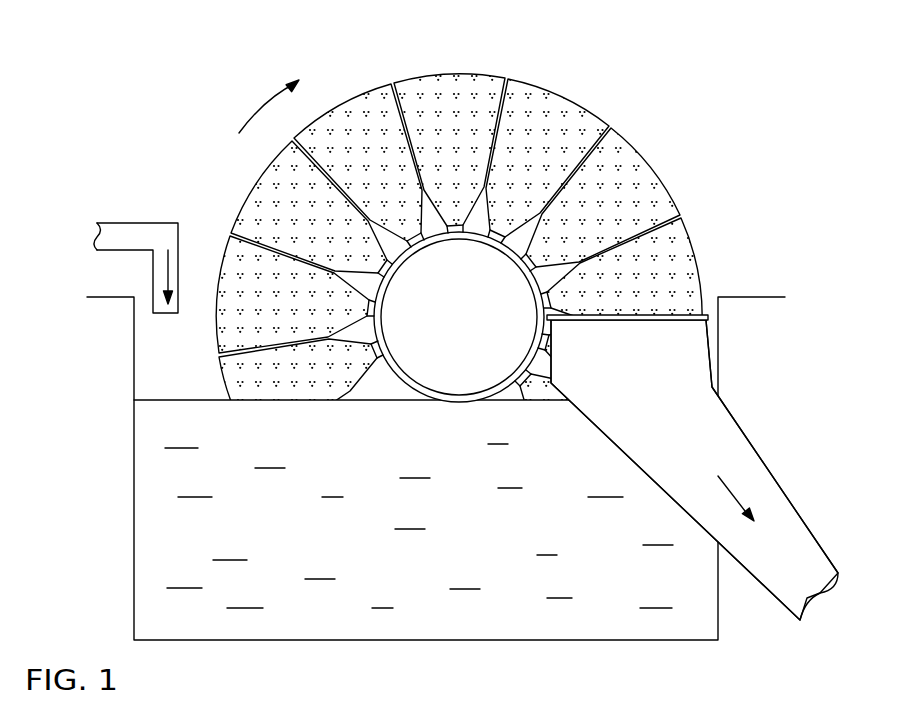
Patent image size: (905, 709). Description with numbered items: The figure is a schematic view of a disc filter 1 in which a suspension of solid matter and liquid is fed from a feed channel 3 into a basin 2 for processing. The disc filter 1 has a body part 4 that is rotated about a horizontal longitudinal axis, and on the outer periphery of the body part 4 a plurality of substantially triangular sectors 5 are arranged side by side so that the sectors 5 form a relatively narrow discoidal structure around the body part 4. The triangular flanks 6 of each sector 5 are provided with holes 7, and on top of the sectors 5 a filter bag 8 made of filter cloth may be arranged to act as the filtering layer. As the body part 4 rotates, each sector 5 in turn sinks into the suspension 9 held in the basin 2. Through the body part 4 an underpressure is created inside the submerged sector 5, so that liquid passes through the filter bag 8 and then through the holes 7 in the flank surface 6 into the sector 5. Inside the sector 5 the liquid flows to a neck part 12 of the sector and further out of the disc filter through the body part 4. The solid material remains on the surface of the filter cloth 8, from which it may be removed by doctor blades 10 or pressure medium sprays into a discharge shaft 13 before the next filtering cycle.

The disc filter 1 is at (774, 161).
The basin 2 is at (133, 530).
The feed channel 3 is at (130, 222).
The body part 4 is at (438, 335).
The sectors 5 is at (234, 204).
The triangular flanks 6 is at (376, 177).
The holes 7 is at (556, 108).
The filter bag 8 is at (430, 87).
The suspension 9 is at (493, 558).
The doctor blades 10 is at (672, 313).
The neck part 12 is at (472, 222).
The discharge shaft 13 is at (681, 413).